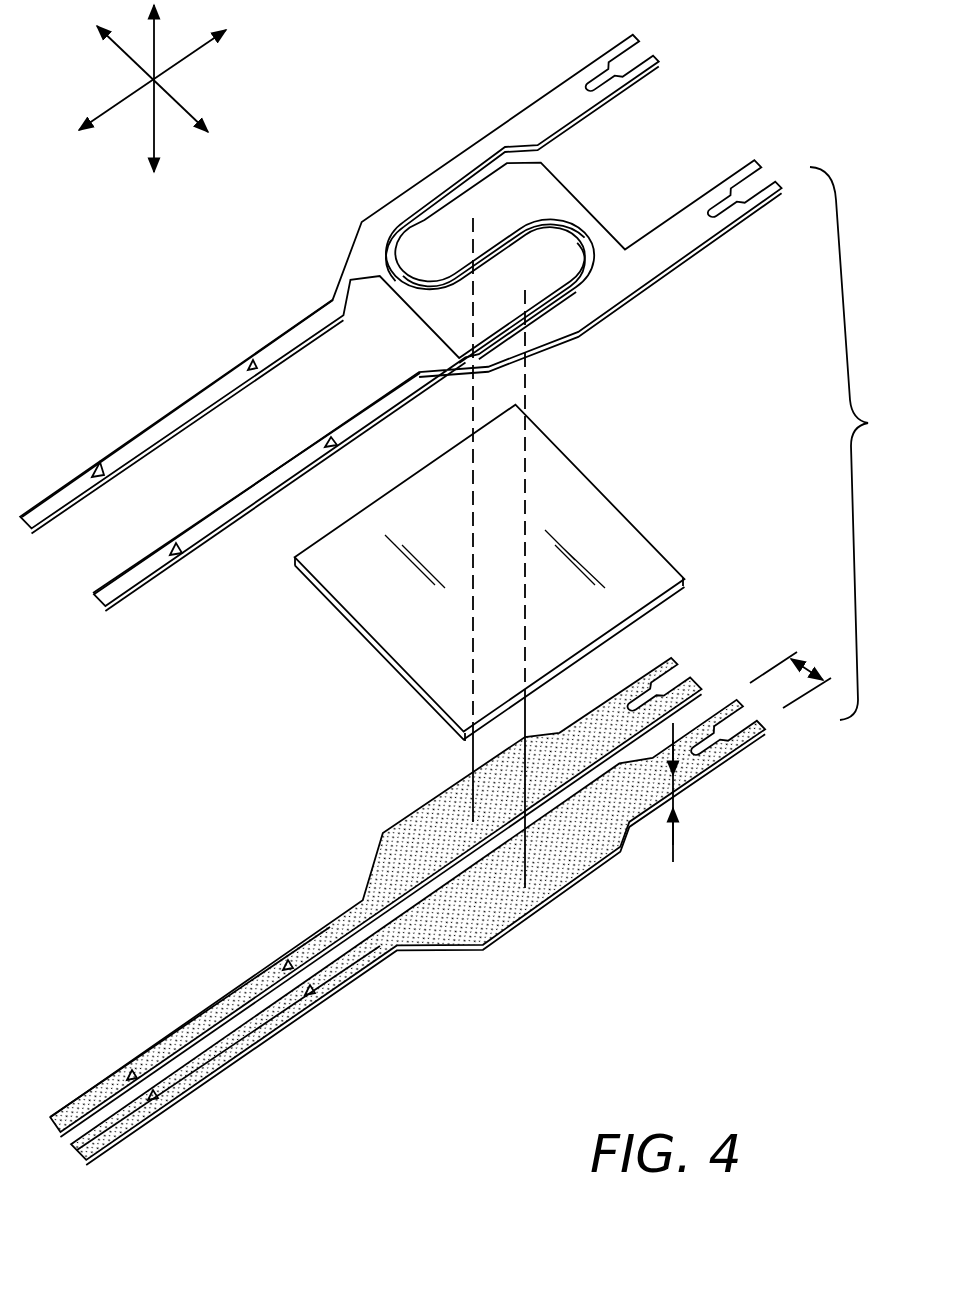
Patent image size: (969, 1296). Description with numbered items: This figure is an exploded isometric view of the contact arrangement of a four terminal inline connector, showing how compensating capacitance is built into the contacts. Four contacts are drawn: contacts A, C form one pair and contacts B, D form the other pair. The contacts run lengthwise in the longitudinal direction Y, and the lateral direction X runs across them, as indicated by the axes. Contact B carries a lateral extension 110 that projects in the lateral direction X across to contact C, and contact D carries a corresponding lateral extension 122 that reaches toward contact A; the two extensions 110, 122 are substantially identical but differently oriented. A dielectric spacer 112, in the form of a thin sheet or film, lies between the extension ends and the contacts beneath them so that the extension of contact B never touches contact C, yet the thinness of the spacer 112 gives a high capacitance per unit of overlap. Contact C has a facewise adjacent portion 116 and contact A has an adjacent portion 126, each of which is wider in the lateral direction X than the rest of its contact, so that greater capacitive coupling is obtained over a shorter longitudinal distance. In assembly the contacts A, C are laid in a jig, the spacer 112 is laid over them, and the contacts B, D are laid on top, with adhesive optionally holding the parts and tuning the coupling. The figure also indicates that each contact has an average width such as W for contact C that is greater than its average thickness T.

The lateral extension 110 is at (410, 330).
The dielectric spacer 112 is at (378, 646).
The facewise adjacent portion 116 is at (548, 895).
The lateral extension 122 is at (582, 188).
The adjacent portion 126 is at (432, 800).
The contact A is at (92, 1083).
The contact B is at (176, 420).
The contact C is at (148, 1120).
The contact D is at (262, 490).
The average thickness T is at (675, 850).
The average width W is at (807, 668).
The lateral direction X is at (172, 120).
The longitudinal direction Y is at (183, 60).